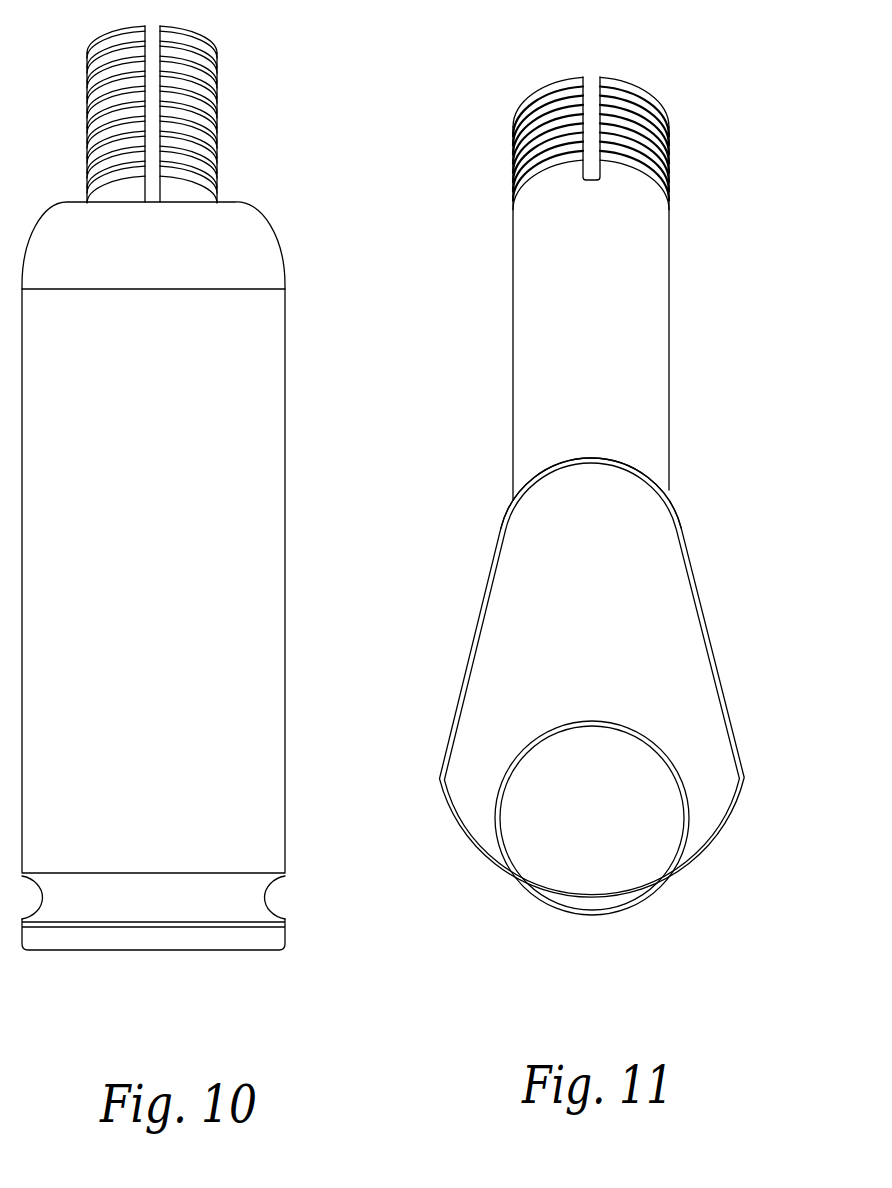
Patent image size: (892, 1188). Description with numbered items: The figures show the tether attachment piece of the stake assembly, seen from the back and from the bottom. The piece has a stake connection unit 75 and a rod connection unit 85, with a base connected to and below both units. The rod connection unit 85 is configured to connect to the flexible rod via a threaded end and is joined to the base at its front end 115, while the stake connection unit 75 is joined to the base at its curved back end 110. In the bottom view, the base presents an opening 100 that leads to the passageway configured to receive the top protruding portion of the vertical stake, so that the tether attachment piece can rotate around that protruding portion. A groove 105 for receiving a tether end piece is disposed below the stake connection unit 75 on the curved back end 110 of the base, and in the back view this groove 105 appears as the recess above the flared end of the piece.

In FIG. 10, the stake connection unit 75 is at (284, 610).
In FIG. 11, the stake connection unit 75 is at (470, 663).
In FIG. 11, the rod connection unit 85 is at (513, 257).
In FIG. 11, the opening 100 is at (535, 848).
In FIG. 10, the groove 105 is at (262, 900).
In FIG. 10, the curved back end 110 is at (65, 950).
In FIG. 11, the front end 115 is at (670, 512).